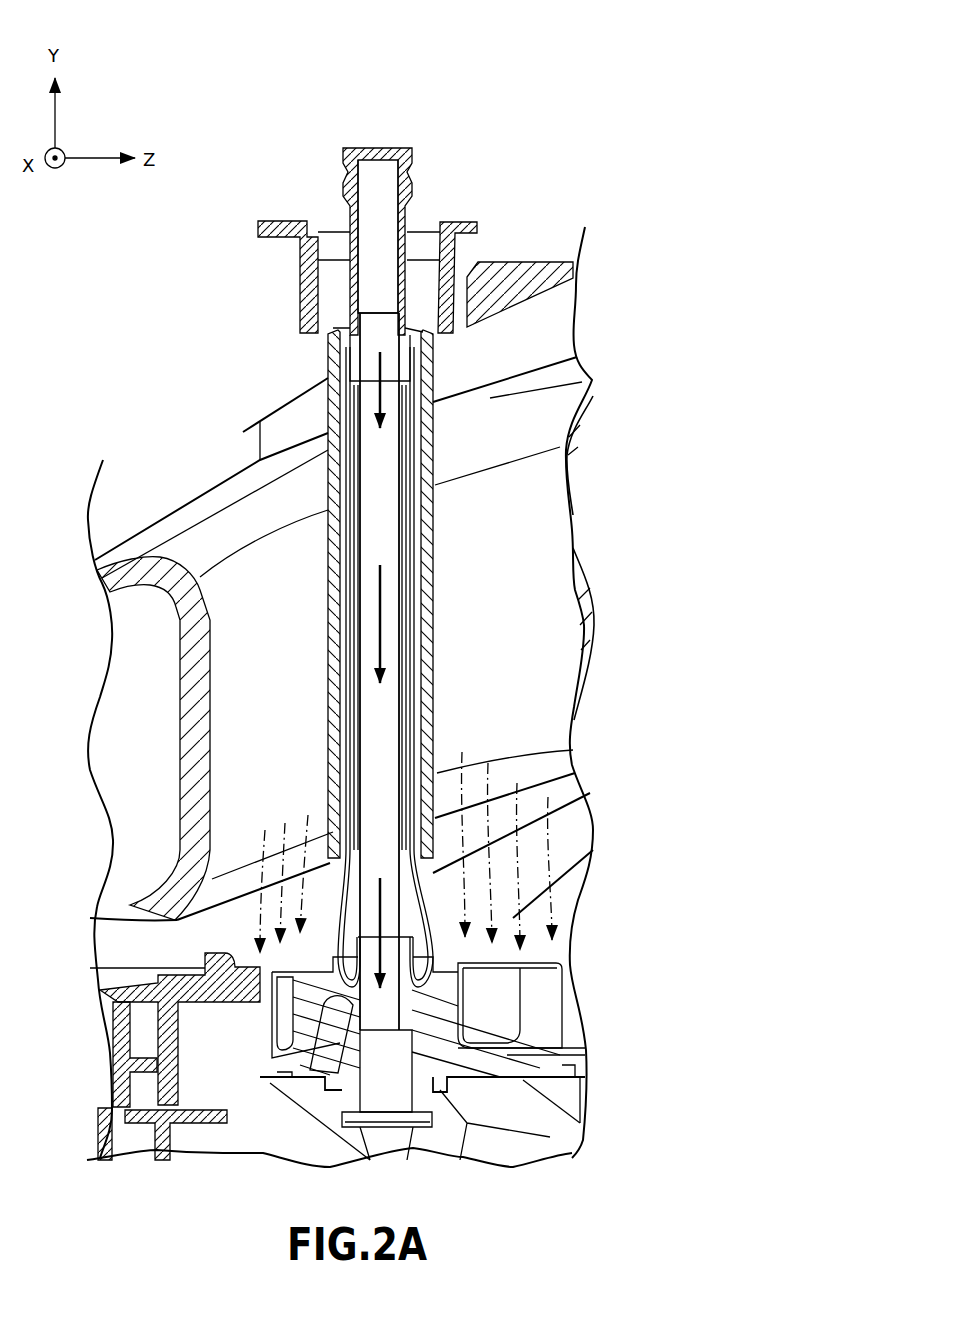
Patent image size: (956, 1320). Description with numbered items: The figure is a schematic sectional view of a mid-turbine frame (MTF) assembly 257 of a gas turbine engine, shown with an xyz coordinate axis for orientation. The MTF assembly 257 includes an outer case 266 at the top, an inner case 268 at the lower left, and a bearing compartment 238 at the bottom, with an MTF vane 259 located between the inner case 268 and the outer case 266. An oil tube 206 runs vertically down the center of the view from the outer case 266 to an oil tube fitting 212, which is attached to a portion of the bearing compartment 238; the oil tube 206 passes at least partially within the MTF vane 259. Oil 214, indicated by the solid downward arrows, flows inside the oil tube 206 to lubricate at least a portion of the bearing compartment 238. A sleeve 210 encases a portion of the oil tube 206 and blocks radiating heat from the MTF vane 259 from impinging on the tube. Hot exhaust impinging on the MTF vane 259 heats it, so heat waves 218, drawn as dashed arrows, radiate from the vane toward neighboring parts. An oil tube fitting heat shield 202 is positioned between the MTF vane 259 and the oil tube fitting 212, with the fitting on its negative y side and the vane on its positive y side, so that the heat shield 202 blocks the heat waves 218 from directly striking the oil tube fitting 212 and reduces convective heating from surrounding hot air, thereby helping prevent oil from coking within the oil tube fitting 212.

The mid-turbine frame assembly 257 is at (525, 160).
The outer case 266 is at (535, 282).
The MTF vane 259 is at (545, 496).
The oil 214 is at (330, 622).
The sleeve 210 is at (333, 705).
The oil tube 206 is at (432, 745).
The heat waves 218 is at (543, 838).
The oil tube fitting heat shield 202 is at (565, 1003).
The oil tube fitting 212 is at (545, 1056).
The bearing compartment 238 is at (555, 1120).
The inner case 268 is at (170, 997).